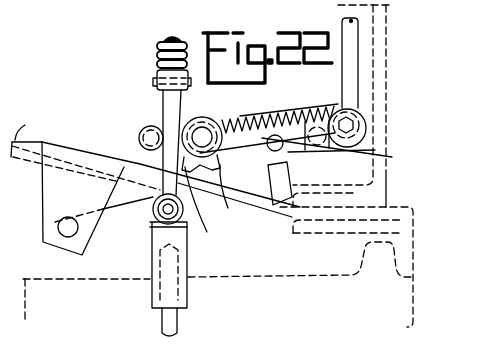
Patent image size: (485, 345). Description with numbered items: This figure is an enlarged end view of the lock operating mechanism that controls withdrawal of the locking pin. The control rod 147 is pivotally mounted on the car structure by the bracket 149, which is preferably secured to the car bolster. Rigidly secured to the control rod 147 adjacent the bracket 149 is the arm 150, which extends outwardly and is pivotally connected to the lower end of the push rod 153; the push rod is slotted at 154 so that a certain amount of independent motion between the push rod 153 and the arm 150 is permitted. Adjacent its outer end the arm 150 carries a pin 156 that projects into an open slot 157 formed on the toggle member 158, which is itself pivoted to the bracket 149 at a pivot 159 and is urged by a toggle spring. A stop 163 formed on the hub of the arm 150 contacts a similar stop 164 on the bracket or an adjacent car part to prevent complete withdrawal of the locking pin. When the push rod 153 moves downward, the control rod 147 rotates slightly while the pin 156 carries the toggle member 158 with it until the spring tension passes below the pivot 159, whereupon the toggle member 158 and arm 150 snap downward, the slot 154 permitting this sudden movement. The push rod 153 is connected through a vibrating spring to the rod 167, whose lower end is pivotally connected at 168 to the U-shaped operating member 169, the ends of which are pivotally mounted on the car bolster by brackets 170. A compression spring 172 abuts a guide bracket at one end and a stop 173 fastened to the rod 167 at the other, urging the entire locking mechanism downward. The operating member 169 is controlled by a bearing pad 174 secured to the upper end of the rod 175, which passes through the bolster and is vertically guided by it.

The control rod 147 is at (202, 117).
The bracket 149 is at (139, 157).
The arm 150 is at (250, 119).
The push rod 153 is at (350, 47).
The slot 154 is at (342, 155).
The pin 156 is at (345, 150).
The open slot 157 is at (312, 143).
The toggle member 158 is at (290, 165).
The pivot 159 is at (266, 144).
The stop 163 is at (226, 203).
The stop 164 is at (192, 237).
The rod 167 is at (166, 39).
The pivotal connection 168 is at (148, 261).
The U-shaped operating member 169 is at (165, 212).
The brackets 170 is at (155, 190).
The compression spring 172 is at (157, 58).
The stop 173 is at (157, 85).
The bearing pad 174 is at (181, 268).
The rod 175 is at (162, 323).